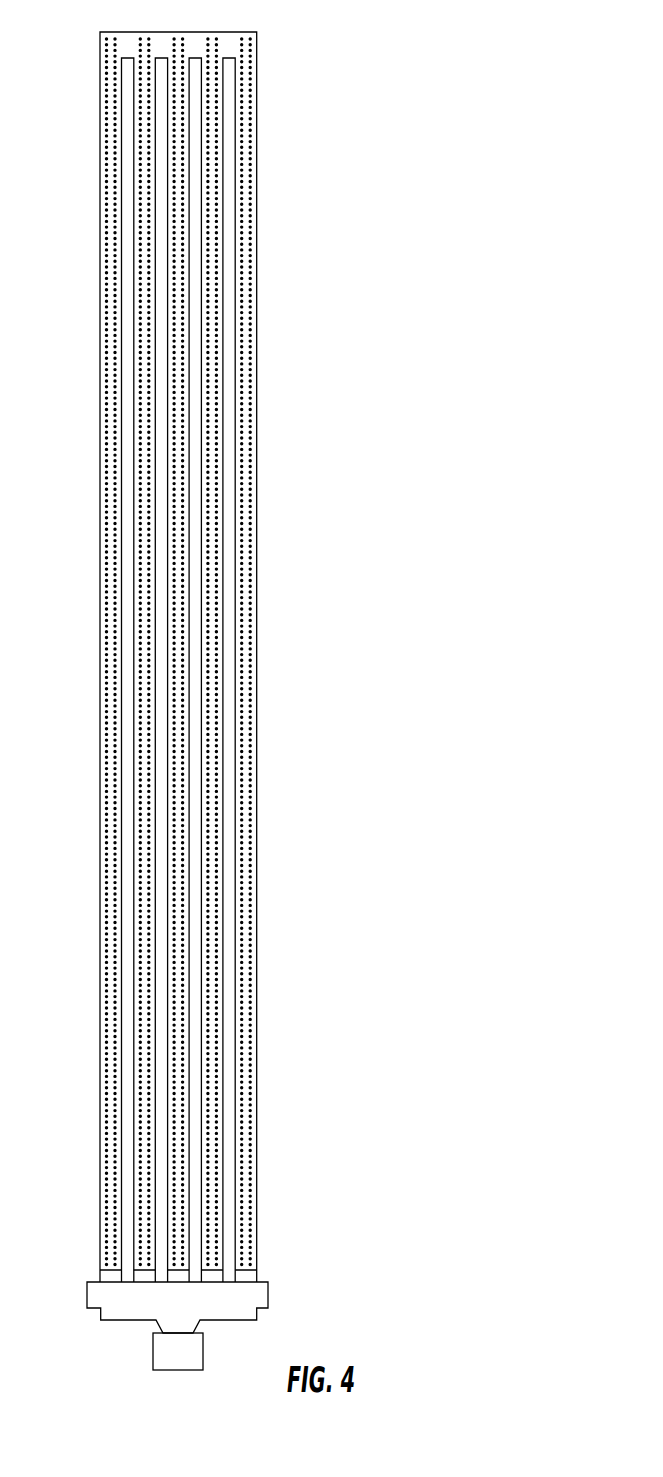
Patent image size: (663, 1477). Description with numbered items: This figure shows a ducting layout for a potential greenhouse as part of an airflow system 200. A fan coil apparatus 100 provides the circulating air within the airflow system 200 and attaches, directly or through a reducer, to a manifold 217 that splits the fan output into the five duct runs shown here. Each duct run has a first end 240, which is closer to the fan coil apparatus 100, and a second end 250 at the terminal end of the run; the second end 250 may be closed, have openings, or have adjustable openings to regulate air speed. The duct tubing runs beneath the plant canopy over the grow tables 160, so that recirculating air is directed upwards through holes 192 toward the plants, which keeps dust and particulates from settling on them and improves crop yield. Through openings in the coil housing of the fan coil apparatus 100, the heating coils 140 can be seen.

The fan coil apparatus 100 is at (203, 1357).
The heating coils 140 is at (138, 173).
The grow tables 160 is at (193, 273).
The holes 192 is at (212, 648).
The airflow system 200 is at (208, 709).
The manifold 217 is at (268, 1298).
The first end 240 is at (256, 1268).
The second end 250 is at (258, 62).